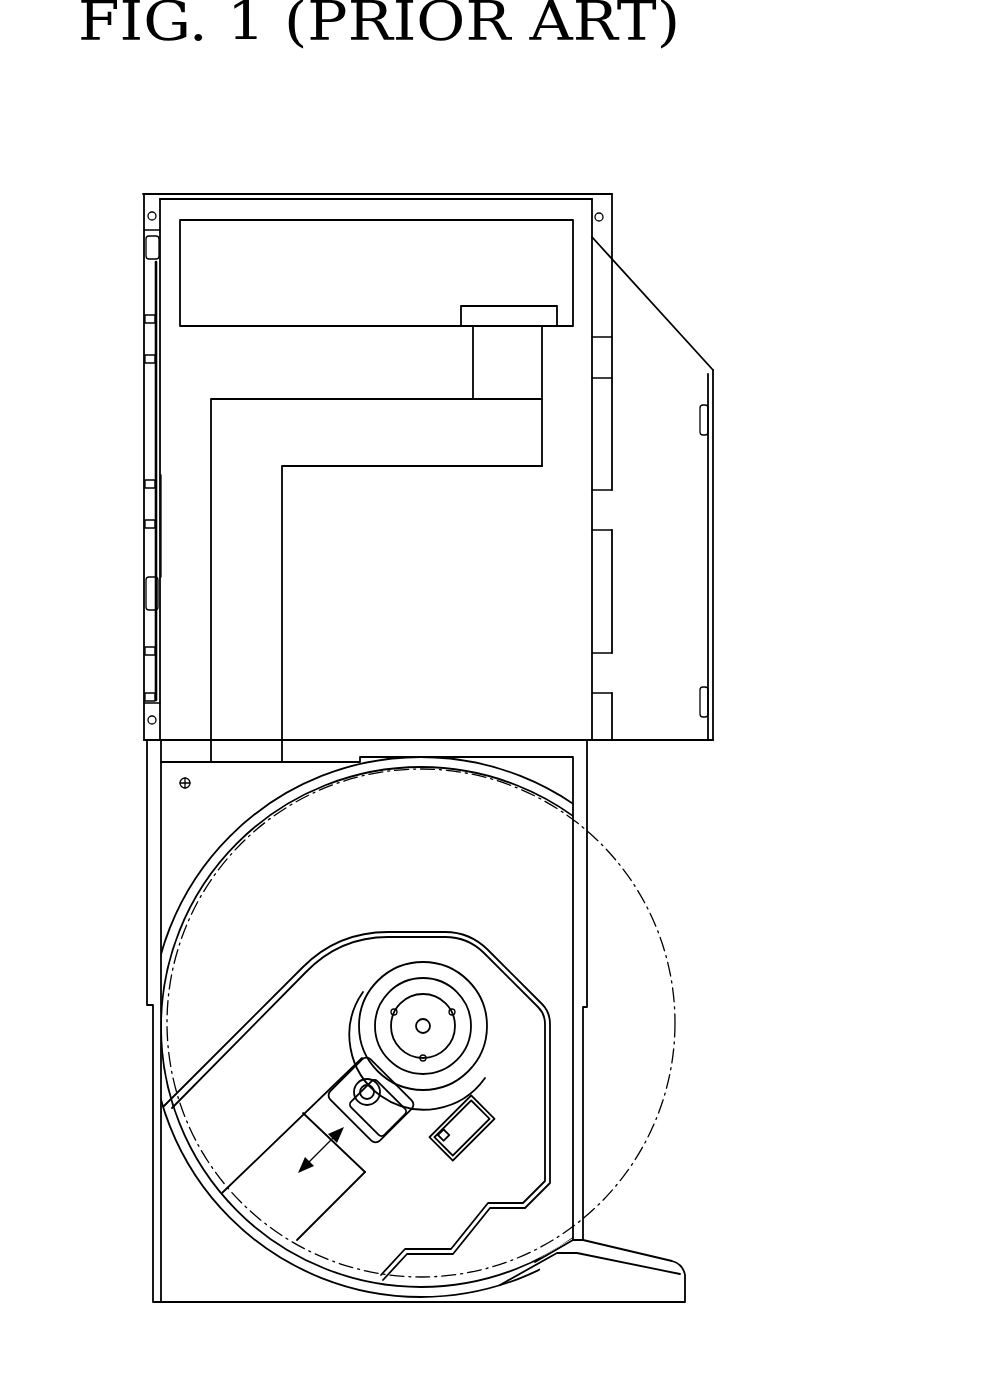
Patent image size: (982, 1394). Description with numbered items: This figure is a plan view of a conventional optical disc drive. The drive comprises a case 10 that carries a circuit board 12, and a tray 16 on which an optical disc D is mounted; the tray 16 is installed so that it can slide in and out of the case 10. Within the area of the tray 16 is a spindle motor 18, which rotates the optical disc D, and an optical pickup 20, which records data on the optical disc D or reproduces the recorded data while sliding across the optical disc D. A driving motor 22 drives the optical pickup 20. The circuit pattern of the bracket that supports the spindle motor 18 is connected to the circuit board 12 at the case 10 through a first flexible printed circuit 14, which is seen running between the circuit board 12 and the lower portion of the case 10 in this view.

The case 10 is at (177, 384).
The circuit board 12 is at (342, 238).
The first flexible printed circuit 14 is at (230, 628).
The tray 16 is at (180, 840).
The spindle motor 18 is at (425, 1012).
The optical pickup 20 is at (385, 1113).
The driving motor 22 is at (468, 1129).
The optical disc D is at (657, 1012).